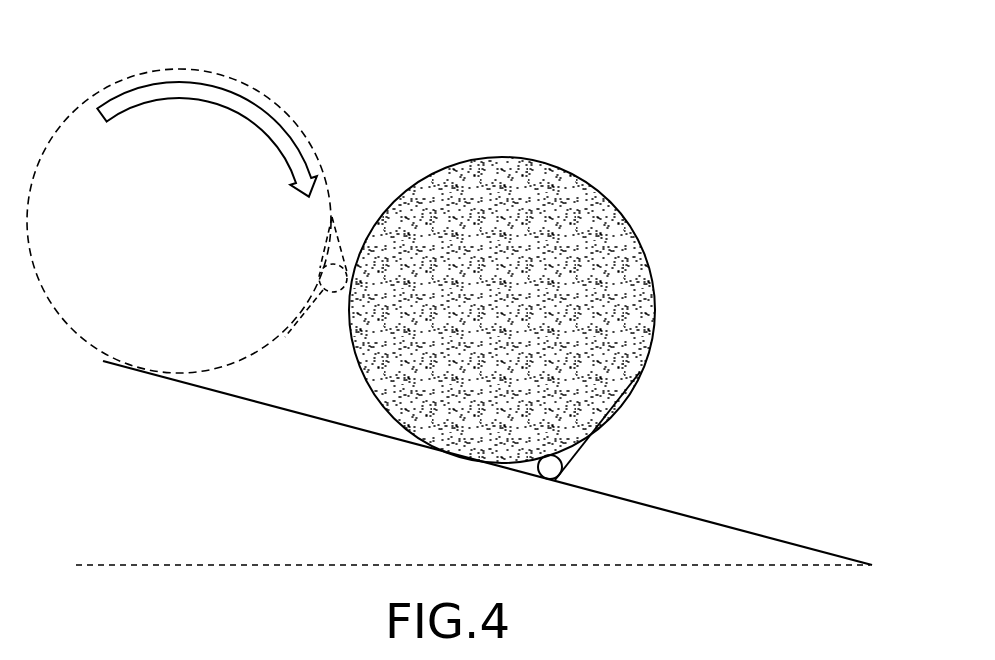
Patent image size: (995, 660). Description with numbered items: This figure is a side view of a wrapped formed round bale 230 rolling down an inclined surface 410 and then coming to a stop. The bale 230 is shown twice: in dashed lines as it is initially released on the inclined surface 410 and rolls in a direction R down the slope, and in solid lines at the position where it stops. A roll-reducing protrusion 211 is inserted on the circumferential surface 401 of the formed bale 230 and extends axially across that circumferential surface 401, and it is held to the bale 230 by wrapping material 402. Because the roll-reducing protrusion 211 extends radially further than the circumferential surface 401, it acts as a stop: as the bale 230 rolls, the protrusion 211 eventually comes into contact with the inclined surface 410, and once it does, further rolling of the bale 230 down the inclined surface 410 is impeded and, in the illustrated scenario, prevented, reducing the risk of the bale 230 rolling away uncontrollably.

The circumferential surface 401 is at (233, 80).
The formed round bale 230 is at (279, 113).
The wrapping material 402 is at (342, 238).
The roll-reducing protrusion 211 is at (336, 290).
The inclined surface 410 is at (706, 521).
The direction R is at (202, 96).